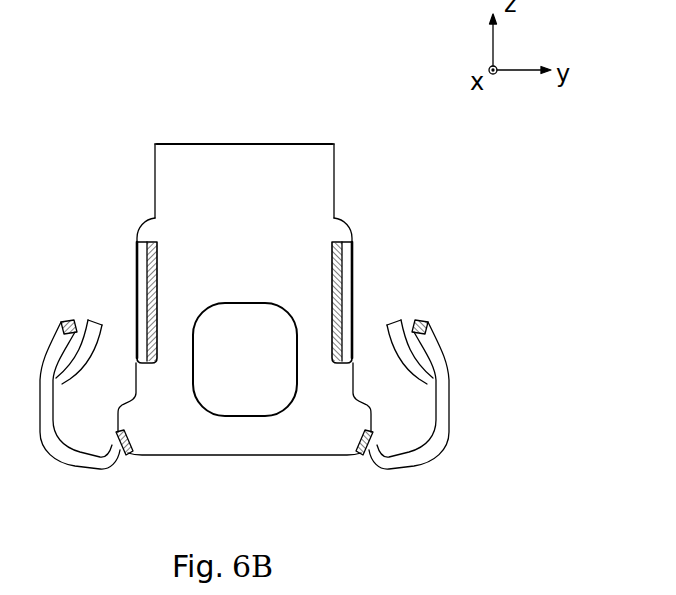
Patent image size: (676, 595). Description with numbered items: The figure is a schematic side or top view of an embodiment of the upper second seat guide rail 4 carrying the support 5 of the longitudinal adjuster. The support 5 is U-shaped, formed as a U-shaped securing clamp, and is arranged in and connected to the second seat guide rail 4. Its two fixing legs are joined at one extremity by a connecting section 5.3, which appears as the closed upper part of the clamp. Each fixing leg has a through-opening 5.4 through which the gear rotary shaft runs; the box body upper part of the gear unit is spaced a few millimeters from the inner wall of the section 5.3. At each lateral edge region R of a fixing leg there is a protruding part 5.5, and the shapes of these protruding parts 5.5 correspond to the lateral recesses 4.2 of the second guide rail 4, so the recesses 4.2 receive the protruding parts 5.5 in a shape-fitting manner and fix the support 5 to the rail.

The second seat guide rail 4 is at (350, 232).
The lateral recess 4.2 is at (135, 345).
The support 5 is at (343, 141).
The section connecting extremities of the fixing legs 5.3 is at (241, 142).
The through-opening 5.4 is at (244, 417).
The protruding part 5.5 is at (106, 450).
The lateral edge region R is at (154, 167).